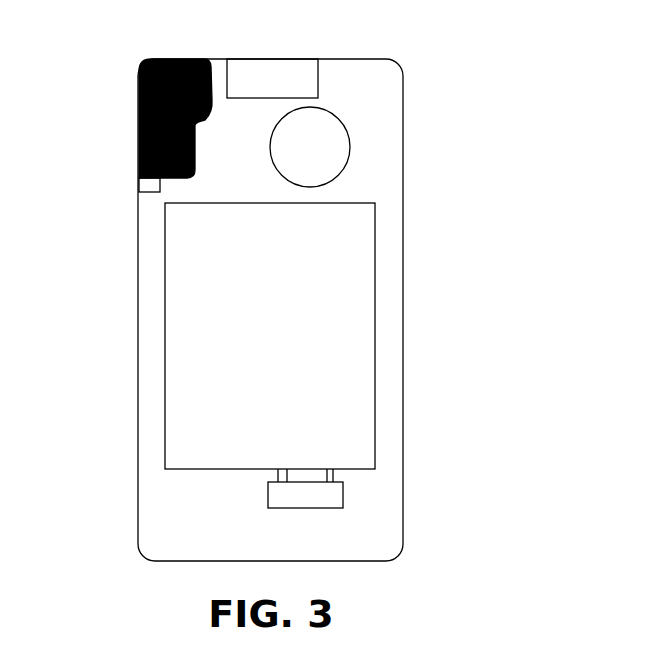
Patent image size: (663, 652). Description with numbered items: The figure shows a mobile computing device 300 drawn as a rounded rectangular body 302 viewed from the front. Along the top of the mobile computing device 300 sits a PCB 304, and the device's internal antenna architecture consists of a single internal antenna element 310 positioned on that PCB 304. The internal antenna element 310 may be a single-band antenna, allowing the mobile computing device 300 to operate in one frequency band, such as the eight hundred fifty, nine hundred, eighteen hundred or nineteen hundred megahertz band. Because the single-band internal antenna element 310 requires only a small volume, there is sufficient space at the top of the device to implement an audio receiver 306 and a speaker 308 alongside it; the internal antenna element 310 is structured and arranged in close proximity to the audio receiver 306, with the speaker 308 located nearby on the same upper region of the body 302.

The mobile computing device 300 is at (427, 59).
The device housing 302 is at (138, 303).
The PCB 304 is at (386, 88).
The audio receiver 306 is at (273, 59).
The speaker 308 is at (332, 107).
The internal antenna element 310 is at (160, 191).